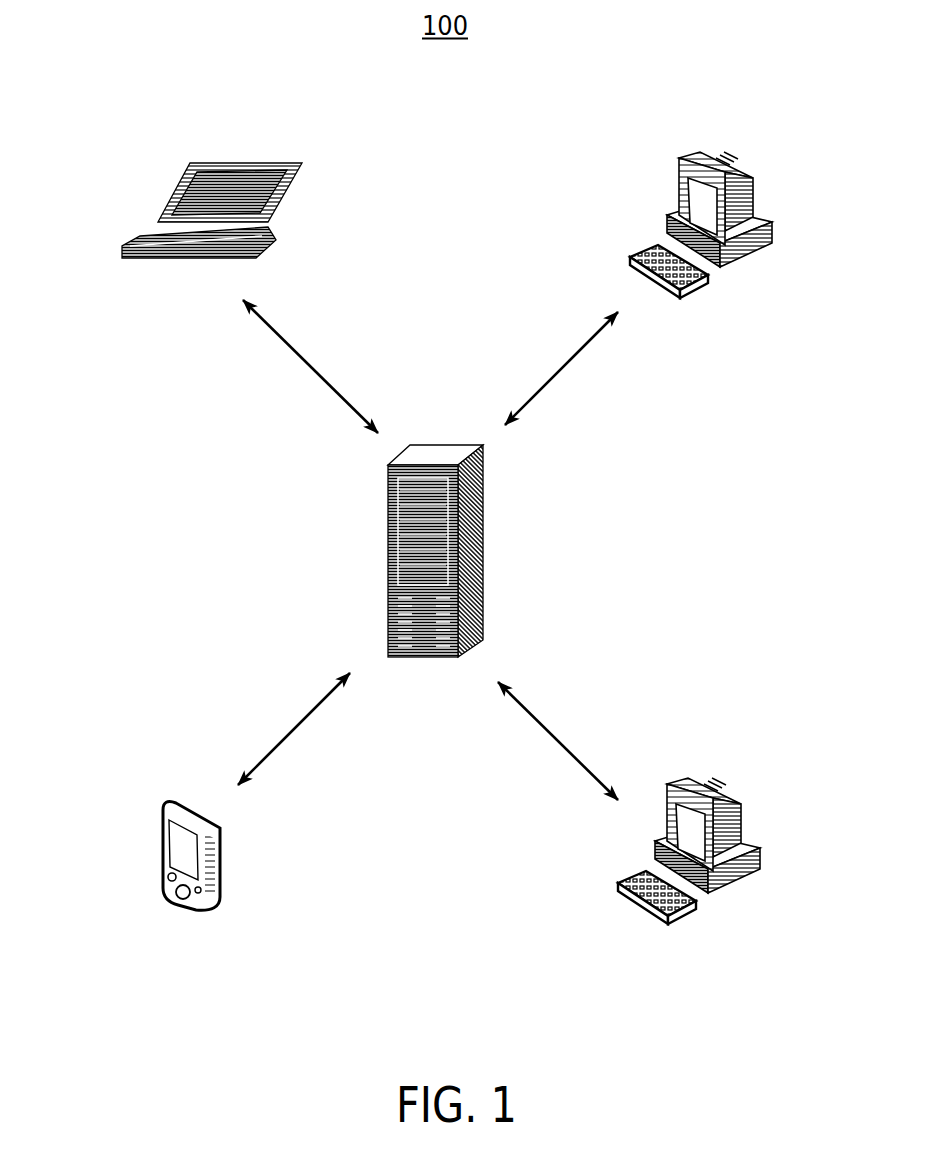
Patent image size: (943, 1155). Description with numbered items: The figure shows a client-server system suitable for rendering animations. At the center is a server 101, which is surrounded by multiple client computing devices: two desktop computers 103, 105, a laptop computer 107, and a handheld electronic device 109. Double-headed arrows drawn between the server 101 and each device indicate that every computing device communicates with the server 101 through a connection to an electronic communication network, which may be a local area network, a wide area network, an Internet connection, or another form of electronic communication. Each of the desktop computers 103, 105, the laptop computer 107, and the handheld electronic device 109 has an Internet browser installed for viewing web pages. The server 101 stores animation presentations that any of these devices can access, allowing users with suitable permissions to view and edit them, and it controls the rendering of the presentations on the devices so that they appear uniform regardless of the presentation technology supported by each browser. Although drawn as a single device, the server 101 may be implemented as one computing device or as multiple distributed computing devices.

The server 101 is at (380, 553).
The desktop computer 103 is at (755, 272).
The desktop computer 105 is at (750, 885).
The laptop computer 107 is at (102, 247).
The handheld electronic device 109 is at (143, 878).